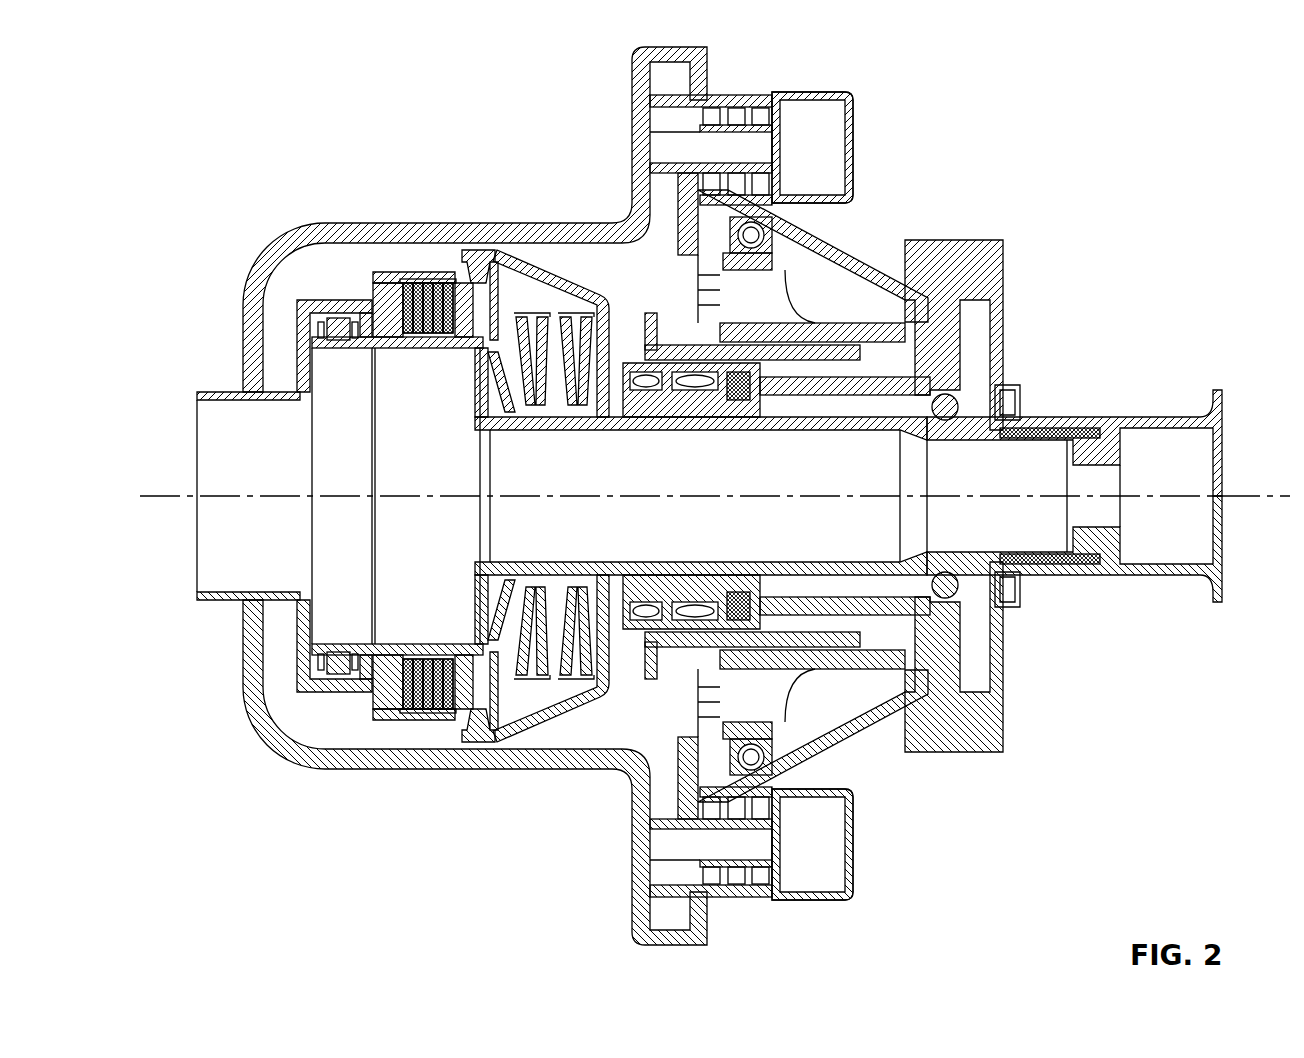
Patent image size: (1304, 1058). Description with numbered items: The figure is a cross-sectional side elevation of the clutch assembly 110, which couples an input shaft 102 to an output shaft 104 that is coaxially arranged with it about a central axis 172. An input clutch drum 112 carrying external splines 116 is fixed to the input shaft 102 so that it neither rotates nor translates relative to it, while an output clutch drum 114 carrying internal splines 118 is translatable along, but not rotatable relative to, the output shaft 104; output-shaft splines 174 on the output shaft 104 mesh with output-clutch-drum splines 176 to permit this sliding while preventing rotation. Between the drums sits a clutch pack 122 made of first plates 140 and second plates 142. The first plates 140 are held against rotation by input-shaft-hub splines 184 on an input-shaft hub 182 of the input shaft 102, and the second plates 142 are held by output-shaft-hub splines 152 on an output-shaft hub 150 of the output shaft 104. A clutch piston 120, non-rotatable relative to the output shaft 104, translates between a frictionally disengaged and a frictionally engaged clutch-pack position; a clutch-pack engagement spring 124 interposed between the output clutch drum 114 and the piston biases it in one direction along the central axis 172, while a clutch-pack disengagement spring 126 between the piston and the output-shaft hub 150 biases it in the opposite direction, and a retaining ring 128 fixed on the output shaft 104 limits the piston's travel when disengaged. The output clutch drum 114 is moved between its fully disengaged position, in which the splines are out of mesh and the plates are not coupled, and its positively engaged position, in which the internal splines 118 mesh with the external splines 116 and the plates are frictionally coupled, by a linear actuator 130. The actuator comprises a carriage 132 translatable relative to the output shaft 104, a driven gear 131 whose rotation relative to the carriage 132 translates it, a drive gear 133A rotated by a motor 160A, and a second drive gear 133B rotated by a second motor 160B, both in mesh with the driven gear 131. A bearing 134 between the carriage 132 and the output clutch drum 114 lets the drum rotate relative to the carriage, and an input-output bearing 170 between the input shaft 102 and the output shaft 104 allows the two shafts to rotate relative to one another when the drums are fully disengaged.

The input shaft 102 is at (215, 392).
The output shaft 104 is at (978, 433).
The clutch assembly 110 is at (1118, 93).
The input clutch drum 112 is at (373, 270).
The output clutch drum 114 is at (575, 278).
The external splines 116 is at (432, 285).
The internal splines 118 is at (482, 268).
The clutch piston 120 is at (492, 350).
The clutch pack 122 is at (425, 345).
The clutch-pack engagement spring 124 is at (598, 296).
The clutch-pack disengagement spring 126 is at (498, 428).
The retaining ring 128 is at (542, 410).
The linear actuator 130 is at (853, 128).
The driven gear 131 is at (700, 187).
The carriage 132 is at (880, 353).
The drive gear 133A is at (690, 107).
The second drive gear 133B is at (693, 875).
The bearing 134 is at (618, 382).
The first plates 140 is at (408, 285).
The second plates 142 is at (456, 345).
The output-shaft hub 150 is at (378, 655).
The output-shaft-hub splines 152 is at (400, 345).
The motor 160A is at (855, 98).
The second motor 160B is at (847, 832).
The input-output bearing 170 is at (340, 327).
The central axis 172 is at (168, 497).
The output-shaft splines 174 is at (633, 583).
The output-clutch-drum splines 176 is at (725, 583).
The input-shaft hub 182 is at (358, 290).
The input-shaft-hub splines 184 is at (420, 285).